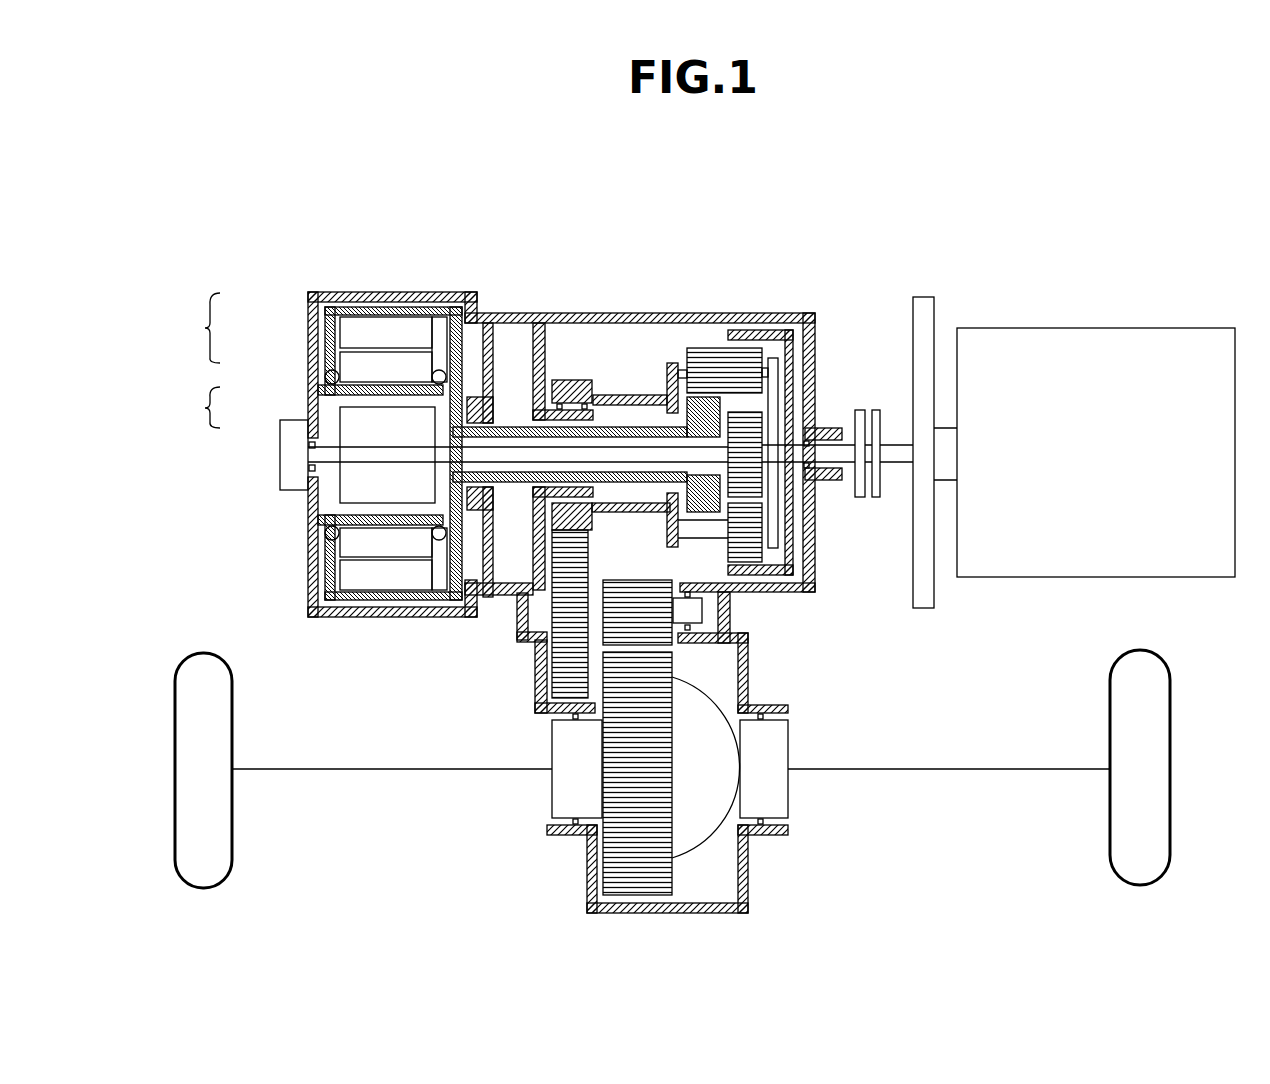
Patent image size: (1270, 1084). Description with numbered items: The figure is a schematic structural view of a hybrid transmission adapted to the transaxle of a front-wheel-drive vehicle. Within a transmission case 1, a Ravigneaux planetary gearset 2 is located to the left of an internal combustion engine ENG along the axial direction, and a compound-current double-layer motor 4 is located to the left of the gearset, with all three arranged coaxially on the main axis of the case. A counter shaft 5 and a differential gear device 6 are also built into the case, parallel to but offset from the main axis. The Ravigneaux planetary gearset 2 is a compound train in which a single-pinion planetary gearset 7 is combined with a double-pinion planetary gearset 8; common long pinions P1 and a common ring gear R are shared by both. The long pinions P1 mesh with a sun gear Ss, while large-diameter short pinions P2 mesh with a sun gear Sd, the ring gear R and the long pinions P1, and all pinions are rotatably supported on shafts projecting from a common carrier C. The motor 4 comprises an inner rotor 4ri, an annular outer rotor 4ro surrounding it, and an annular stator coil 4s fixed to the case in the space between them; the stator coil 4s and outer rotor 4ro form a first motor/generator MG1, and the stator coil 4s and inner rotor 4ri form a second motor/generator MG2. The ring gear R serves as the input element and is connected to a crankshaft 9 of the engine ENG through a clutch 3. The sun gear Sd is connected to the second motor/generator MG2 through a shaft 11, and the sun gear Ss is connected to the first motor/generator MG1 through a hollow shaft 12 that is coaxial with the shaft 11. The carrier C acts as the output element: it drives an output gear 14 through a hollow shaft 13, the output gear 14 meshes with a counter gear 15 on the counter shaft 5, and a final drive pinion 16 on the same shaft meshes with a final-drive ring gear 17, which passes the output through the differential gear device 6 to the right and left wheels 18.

The transmission case 1 is at (585, 313).
The Ravigneaux planetary gearset 2 is at (757, 320).
The clutch 3 is at (873, 405).
The compound-current double-layer motor 4 is at (373, 292).
The outer rotor 4ro is at (350, 333).
The stator coil 4s is at (350, 367).
The inner rotor 4ri is at (350, 425).
The counter shaft 5 is at (693, 613).
The differential gear device 6 is at (718, 680).
The single-pinion planetary gearset 7 is at (712, 340).
The double-pinion planetary gearset 8 is at (780, 327).
The crankshaft 9 is at (940, 437).
The shaft 11 is at (505, 440).
The hollow shaft 12 is at (528, 323).
The hollow shaft 13 is at (585, 380).
The output gear 14 is at (560, 378).
The counter gear 15 is at (562, 672).
The final drive pinion 16 is at (630, 579).
The final-drive ring gear 17 is at (617, 857).
The wheels 18 is at (232, 860).
The carrier C is at (668, 362).
The common long pinions P1 is at (700, 347).
The large-diameter short pinions P2 is at (757, 520).
The ring gear R is at (735, 330).
The sun gear Sd is at (748, 422).
The sun gear Ss is at (660, 398).
The internal combustion engine ENG is at (1113, 335).
The first motor/generator MG1 is at (184, 328).
The second motor/generator MG2 is at (184, 407).